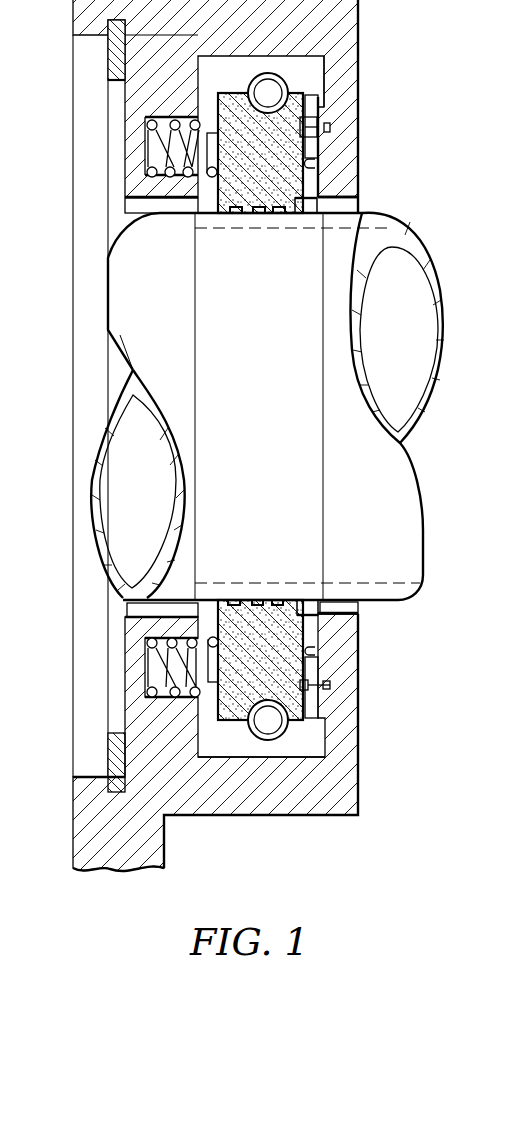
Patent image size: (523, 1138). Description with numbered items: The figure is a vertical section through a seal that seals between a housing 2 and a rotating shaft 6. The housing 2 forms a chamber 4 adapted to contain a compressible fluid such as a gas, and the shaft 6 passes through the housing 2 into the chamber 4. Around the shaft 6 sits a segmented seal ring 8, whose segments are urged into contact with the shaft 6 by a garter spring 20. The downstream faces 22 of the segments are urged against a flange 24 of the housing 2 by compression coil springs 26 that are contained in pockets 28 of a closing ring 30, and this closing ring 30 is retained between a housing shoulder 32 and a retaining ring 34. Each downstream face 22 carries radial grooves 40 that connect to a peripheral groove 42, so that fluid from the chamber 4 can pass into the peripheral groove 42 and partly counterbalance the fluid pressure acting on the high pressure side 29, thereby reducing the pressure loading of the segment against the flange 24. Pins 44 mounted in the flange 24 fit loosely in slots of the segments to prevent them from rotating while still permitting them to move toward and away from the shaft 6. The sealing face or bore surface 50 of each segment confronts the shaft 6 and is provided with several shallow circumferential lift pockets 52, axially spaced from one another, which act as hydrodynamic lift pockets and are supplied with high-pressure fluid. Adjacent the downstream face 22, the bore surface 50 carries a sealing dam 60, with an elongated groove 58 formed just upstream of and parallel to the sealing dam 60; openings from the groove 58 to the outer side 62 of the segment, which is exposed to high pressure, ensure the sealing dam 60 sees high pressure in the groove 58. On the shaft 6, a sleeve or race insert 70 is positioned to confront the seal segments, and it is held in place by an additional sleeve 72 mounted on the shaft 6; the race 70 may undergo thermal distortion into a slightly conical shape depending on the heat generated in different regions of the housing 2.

The housing 2 is at (384, 30).
The chamber 4 is at (98, 228).
The shaft 6 is at (402, 515).
The seal ring 8 is at (238, 93).
The garter spring 20 is at (277, 72).
The downstream face 22 is at (325, 188).
The flange 24 is at (326, 109).
The compression coil spring 26 is at (167, 148).
The pocket 28 is at (157, 137).
The high pressure side 29 is at (215, 185).
The closing ring 30 is at (165, 760).
The housing shoulder 32 is at (200, 760).
The retaining ring 34 is at (110, 750).
The radial groove 40 is at (318, 150).
The peripheral groove 42 is at (330, 130).
The pin 44 is at (340, 104).
The bore surface 50 is at (222, 214).
The lift pocket 52 is at (258, 214).
The elongated groove 58 is at (302, 214).
The sealing dam 60 is at (312, 214).
The outer side 62 is at (300, 723).
The sleeve or race insert 70 is at (208, 600).
The additional sleeve 72 is at (405, 575).